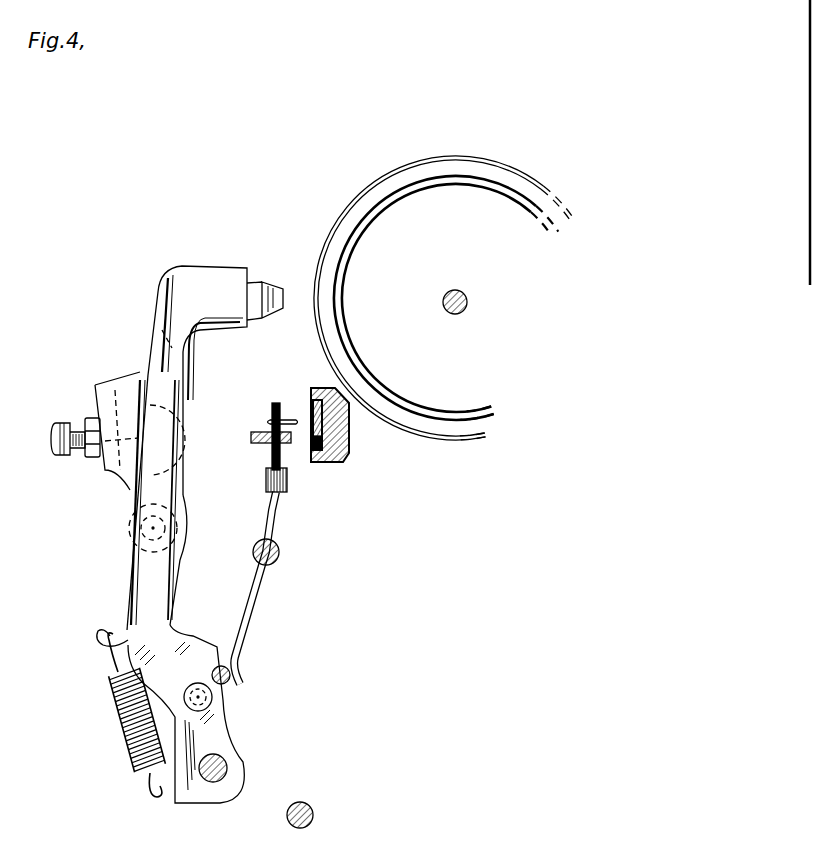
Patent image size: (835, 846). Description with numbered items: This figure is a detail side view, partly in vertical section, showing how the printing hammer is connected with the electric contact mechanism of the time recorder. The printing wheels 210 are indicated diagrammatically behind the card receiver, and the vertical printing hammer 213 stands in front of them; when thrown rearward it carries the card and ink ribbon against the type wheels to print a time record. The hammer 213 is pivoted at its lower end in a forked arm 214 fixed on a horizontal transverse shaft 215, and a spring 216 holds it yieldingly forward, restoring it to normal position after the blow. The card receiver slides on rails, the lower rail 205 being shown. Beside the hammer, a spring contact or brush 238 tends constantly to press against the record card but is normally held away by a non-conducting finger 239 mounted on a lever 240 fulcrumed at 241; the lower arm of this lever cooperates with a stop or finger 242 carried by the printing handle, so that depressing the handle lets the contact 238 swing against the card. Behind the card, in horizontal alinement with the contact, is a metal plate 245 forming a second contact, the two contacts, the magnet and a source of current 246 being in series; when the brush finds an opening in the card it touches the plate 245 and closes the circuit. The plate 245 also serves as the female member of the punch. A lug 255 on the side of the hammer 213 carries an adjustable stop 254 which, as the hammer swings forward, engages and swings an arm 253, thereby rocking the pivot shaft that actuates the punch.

The lower rail 205 is at (311, 806).
The printing wheels 210 is at (444, 298).
The printing hammer 213 is at (205, 448).
The forked arm 214 is at (218, 736).
The horizontal transverse shaft 215 is at (222, 767).
The spring 216 is at (122, 724).
The spring contact or brush 238 is at (290, 418).
The non-conducting finger 239 is at (272, 458).
The lever 240 is at (270, 499).
The fulcrum 241 is at (280, 548).
The stop or finger 242 is at (228, 683).
The contact plate 245 is at (352, 445).
The source of current 246 is at (317, 446).
The arm 253 is at (186, 513).
The adjustable stop 254 is at (62, 424).
The lug 255 is at (103, 471).